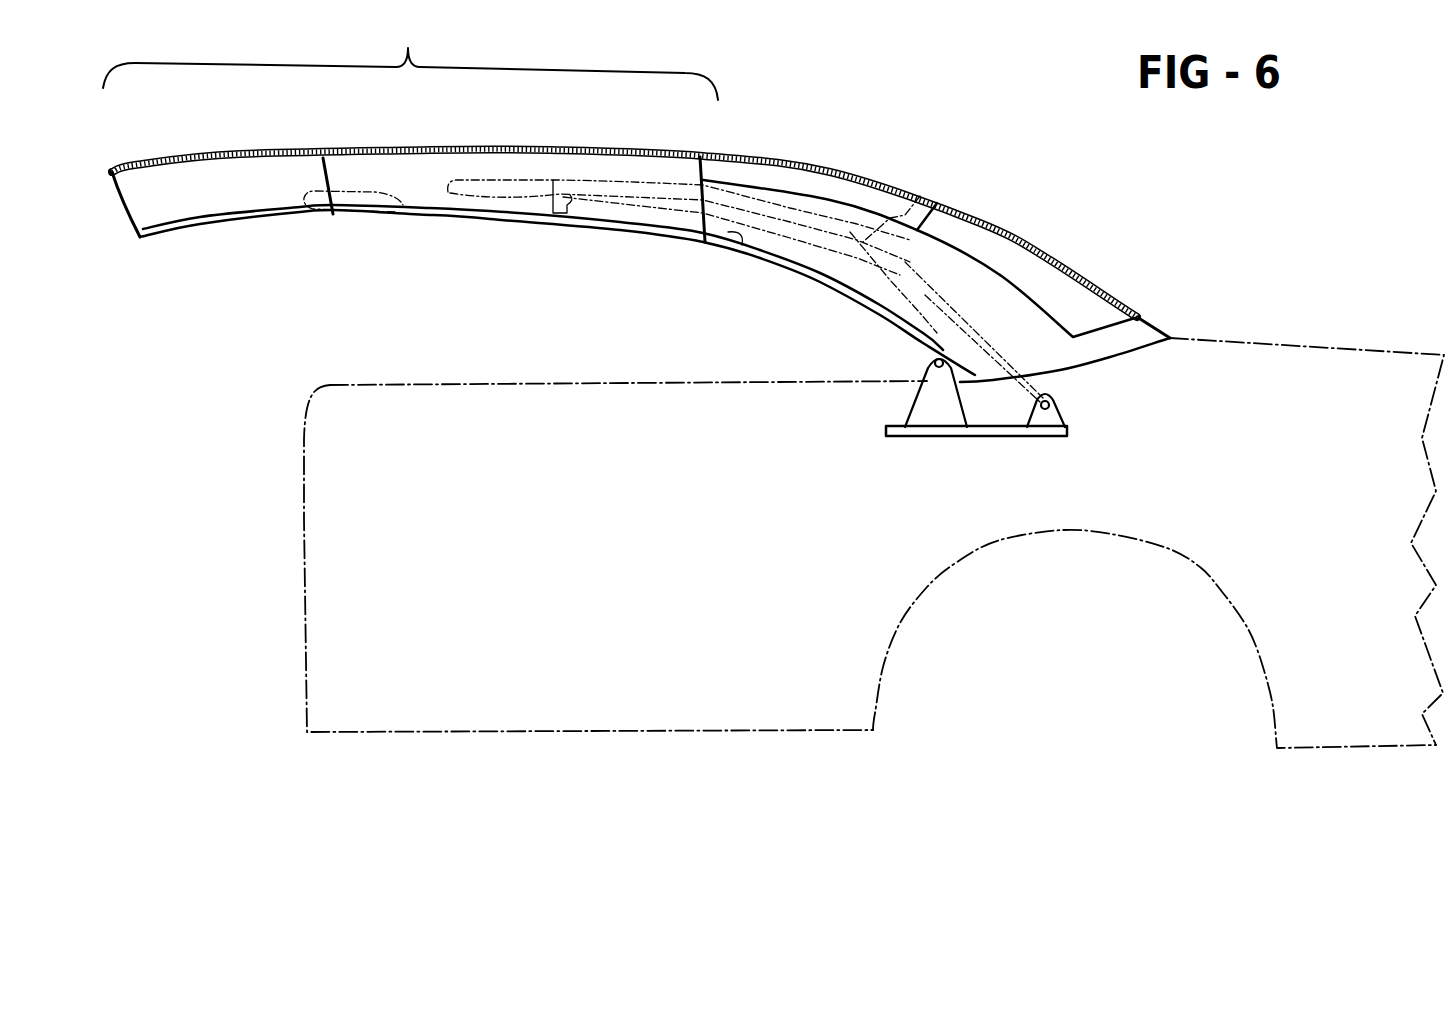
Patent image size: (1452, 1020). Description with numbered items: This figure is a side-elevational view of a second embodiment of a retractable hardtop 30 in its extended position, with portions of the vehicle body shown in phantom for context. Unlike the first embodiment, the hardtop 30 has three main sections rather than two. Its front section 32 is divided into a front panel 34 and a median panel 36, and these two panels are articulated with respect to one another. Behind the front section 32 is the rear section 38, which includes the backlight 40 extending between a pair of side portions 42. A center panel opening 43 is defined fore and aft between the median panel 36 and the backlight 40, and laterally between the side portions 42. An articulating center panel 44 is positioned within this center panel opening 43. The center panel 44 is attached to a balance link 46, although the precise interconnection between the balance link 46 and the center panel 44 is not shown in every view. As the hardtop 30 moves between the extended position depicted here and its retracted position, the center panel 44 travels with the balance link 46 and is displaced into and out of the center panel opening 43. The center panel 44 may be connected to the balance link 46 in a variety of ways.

The hardtop 30 is at (769, 126).
The front section 32 is at (410, 62).
The front panel 34 is at (235, 172).
The median panel 36 is at (466, 152).
The rear section 38 is at (1142, 334).
The backlight 40 is at (1038, 267).
The side portions 42 is at (960, 267).
The center panel opening 43 is at (797, 182).
The center panel 44 is at (882, 197).
The balance link 46 is at (920, 196).